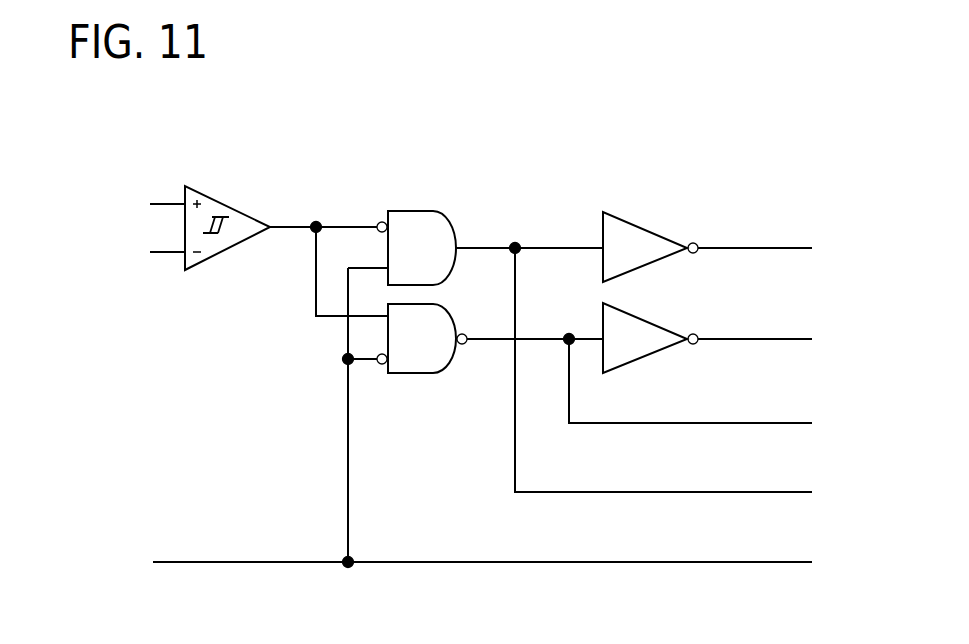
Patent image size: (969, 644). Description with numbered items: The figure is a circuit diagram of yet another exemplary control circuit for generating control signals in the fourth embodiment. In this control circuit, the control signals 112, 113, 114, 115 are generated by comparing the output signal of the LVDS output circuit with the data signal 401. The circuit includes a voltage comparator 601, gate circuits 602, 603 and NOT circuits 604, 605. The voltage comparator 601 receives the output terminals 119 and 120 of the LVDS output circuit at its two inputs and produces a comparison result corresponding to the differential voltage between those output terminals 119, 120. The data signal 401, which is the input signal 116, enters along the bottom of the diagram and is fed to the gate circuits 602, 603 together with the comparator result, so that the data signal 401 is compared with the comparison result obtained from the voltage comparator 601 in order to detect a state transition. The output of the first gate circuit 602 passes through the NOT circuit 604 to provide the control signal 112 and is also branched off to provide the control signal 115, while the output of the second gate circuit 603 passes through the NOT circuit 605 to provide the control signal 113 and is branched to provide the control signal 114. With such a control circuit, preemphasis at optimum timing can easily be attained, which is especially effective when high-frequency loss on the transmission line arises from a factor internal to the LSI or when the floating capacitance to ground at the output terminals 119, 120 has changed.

The control signal 112 is at (783, 248).
The control signal 113 is at (783, 339).
The control signal 114 is at (719, 392).
The control signal 115 is at (692, 381).
The input signal 116 is at (608, 563).
The output terminal 119 is at (138, 203).
The output terminal 120 is at (138, 250).
The data signal 401 is at (220, 563).
The voltage comparator 601 is at (223, 251).
The gate circuit 602 is at (416, 211).
The gate circuit 603 is at (425, 373).
The NOT circuit 604 is at (645, 228).
The NOT circuit 605 is at (645, 319).